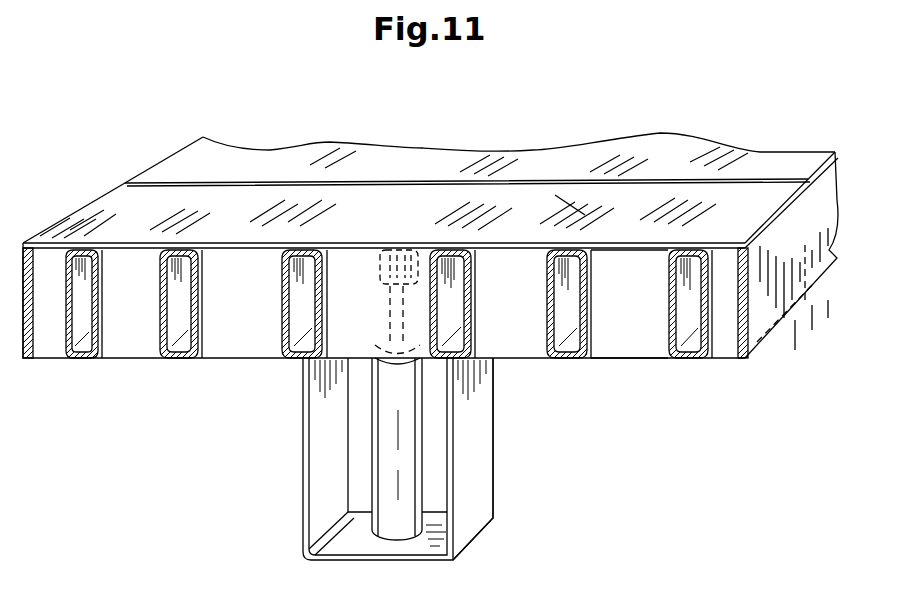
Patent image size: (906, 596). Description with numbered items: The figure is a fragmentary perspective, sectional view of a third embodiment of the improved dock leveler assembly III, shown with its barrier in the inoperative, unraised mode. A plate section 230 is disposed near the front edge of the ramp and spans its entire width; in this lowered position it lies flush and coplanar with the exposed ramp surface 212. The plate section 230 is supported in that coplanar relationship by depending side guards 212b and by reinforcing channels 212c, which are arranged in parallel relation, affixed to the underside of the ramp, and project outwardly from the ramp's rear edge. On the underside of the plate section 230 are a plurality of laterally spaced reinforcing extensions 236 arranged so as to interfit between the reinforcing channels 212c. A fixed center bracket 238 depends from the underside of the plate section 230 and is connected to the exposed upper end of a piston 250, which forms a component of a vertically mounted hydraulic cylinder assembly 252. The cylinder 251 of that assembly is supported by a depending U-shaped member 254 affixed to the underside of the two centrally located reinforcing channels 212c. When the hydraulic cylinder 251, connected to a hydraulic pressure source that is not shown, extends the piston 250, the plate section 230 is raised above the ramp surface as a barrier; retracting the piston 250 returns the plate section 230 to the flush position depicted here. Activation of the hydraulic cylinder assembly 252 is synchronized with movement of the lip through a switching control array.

The plate section 230 is at (92, 221).
The exposed ramp surface 212 is at (424, 148).
The dock leveler assembly III is at (570, 206).
The depending side guards 212b is at (27, 360).
The reinforcing channels 212c is at (181, 350).
The reinforcing extensions 236 is at (625, 334).
The fixed center bracket 238 is at (382, 272).
The piston 250 is at (390, 296).
The hydraulic cylinder assembly 252 is at (358, 436).
The U-shaped member 254 is at (483, 500).
The hydraulic cylinder 251 is at (388, 482).